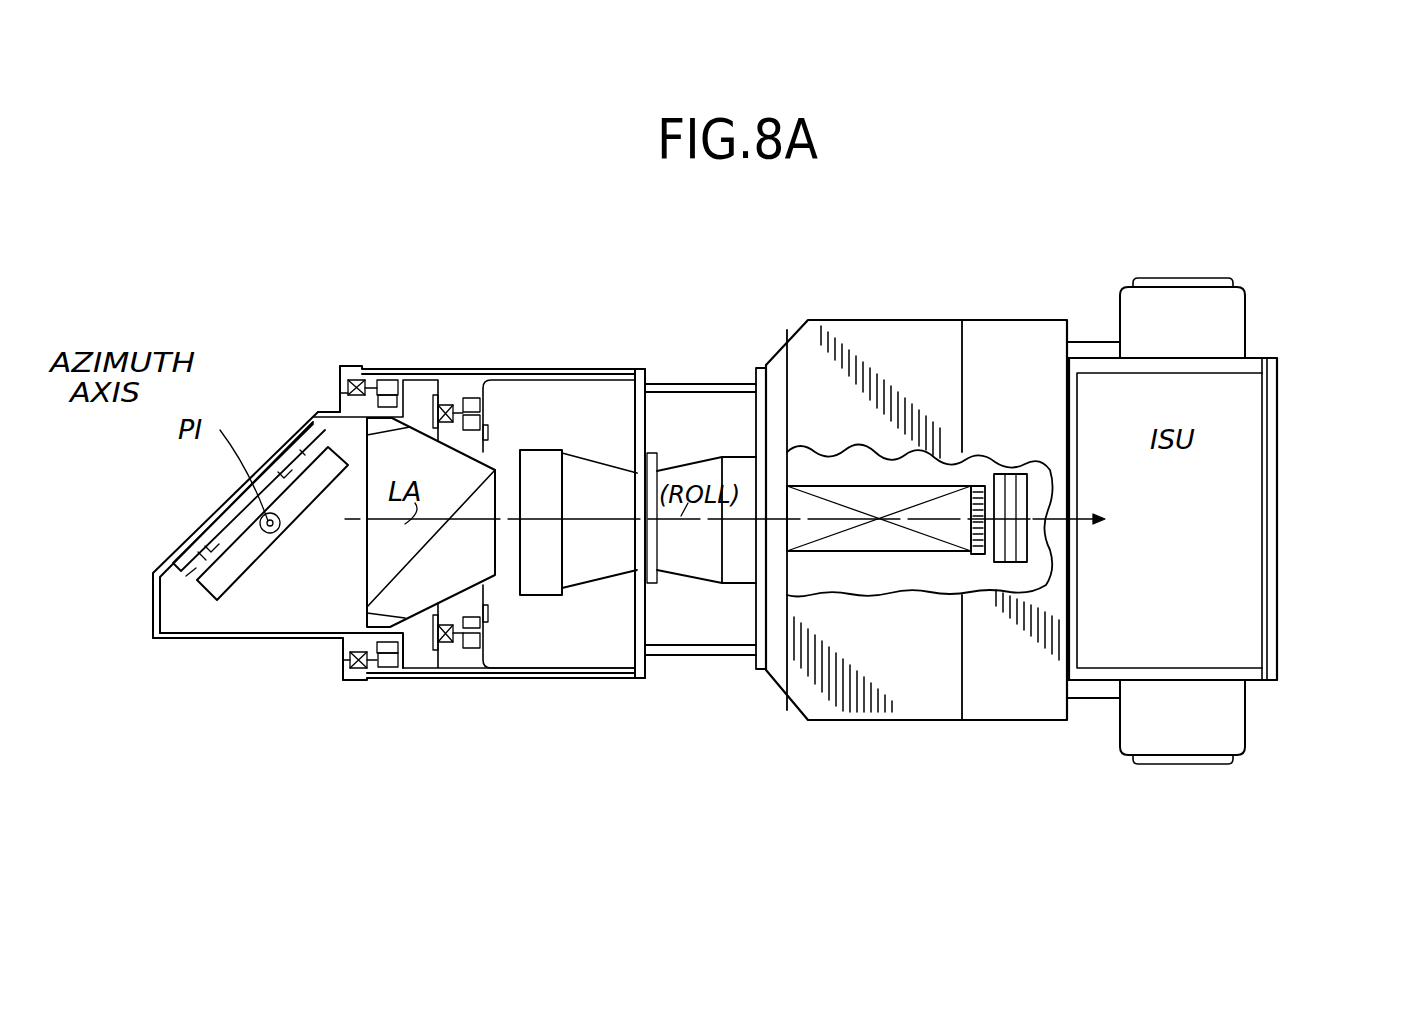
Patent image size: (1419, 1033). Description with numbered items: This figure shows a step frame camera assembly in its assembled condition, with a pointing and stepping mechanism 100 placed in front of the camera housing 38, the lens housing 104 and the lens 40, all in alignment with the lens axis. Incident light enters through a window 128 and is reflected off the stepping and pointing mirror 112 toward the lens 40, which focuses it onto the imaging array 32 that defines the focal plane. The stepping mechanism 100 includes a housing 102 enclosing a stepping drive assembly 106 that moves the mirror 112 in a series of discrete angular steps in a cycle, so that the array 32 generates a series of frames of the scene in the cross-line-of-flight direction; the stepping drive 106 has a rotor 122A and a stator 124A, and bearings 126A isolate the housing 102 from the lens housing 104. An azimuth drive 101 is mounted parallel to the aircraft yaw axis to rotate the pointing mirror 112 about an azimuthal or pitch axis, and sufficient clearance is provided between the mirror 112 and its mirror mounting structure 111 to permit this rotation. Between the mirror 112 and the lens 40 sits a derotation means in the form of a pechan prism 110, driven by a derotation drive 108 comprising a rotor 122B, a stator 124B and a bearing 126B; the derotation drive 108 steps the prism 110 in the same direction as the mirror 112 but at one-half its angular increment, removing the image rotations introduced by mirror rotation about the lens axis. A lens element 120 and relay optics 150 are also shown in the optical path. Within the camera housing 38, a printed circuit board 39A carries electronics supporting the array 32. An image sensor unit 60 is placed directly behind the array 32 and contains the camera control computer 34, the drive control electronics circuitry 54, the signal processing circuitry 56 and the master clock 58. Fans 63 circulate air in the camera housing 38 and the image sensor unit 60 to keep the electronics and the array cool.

The pointing and stepping mechanism 100 is at (265, 443).
The azimuth drive 101 is at (207, 517).
The housing 102 is at (207, 518).
The lens housing 104 is at (530, 368).
The stepping drive assembly 106 is at (394, 370).
The derotation drive 108 is at (471, 388).
The pechan prism 110 is at (367, 584).
The mirror mounting structure 111 is at (197, 547).
The stepping mirror 112 is at (237, 568).
The lens 120 is at (447, 404).
The rotor 122A is at (383, 372).
The rotor 122B is at (482, 405).
The stator 124A is at (348, 392).
The stator 124B is at (482, 423).
The bearings 126A is at (345, 393).
The bearing 126B is at (465, 437).
The window 128 is at (195, 642).
The relay optics 150 is at (884, 486).
The imaging array 32 is at (971, 553).
The camera control computer 34 is at (1236, 482).
The camera housing 38 is at (910, 320).
The printed circuit board 39A is at (1013, 478).
The lens 40 is at (603, 468).
The drive control electronics circuitry 54 is at (1093, 350).
The signal processing circuitry 56 is at (1093, 689).
The master clock 58 is at (1315, 392).
The image sensor unit 60 is at (1206, 492).
The fans 63 is at (1157, 308).